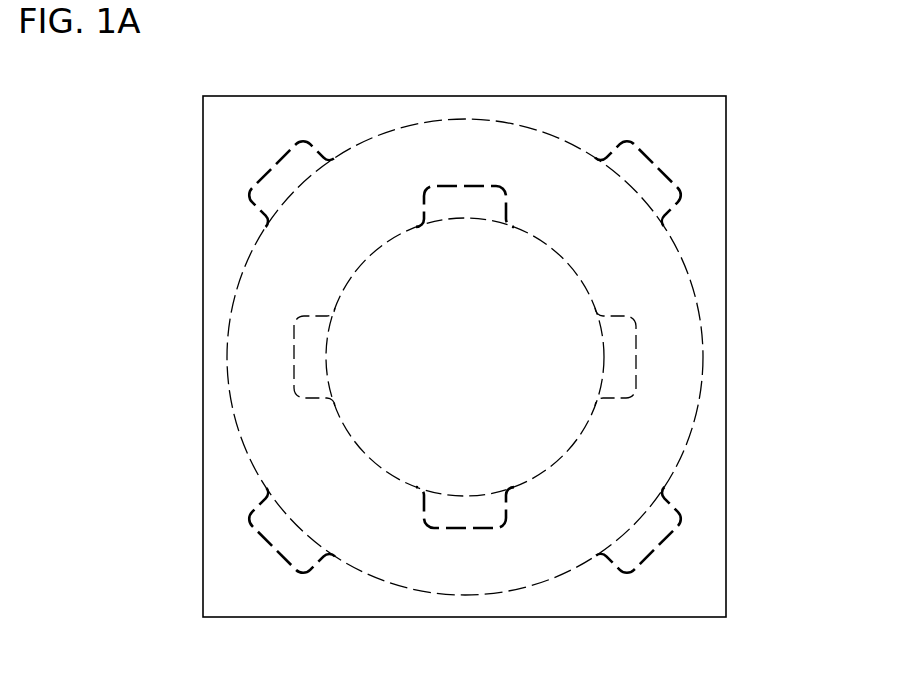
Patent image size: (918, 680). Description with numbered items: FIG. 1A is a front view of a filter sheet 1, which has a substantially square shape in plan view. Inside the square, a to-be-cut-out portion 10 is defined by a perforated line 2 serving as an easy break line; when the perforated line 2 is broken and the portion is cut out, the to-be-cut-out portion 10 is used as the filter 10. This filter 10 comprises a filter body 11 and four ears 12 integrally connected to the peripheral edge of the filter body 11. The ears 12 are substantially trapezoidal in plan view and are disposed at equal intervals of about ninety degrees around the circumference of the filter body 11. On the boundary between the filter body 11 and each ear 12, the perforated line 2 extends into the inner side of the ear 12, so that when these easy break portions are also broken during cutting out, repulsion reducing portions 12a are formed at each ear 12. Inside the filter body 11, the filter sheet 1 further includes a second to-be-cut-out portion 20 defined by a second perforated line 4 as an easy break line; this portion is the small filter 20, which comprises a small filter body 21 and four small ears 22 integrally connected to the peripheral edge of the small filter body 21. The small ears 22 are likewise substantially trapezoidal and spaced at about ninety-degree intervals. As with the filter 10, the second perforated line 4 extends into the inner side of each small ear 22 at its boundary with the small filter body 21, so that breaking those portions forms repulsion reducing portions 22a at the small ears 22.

The filter sheet 1 is at (735, 148).
The perforated line 2 is at (530, 128).
The second perforated line 4 is at (595, 297).
The to-be-cut-out portion (filter) 10 is at (641, 432).
The filter body 11 is at (267, 315).
The ear 12 is at (280, 177).
The repulsion reducing portion 12a is at (598, 165).
The second to-be-cut-out portion (small filter) 20 is at (373, 419).
The small filter body 21 is at (513, 453).
The small ear 22 is at (456, 513).
The repulsion reducing portion 22a is at (428, 221).